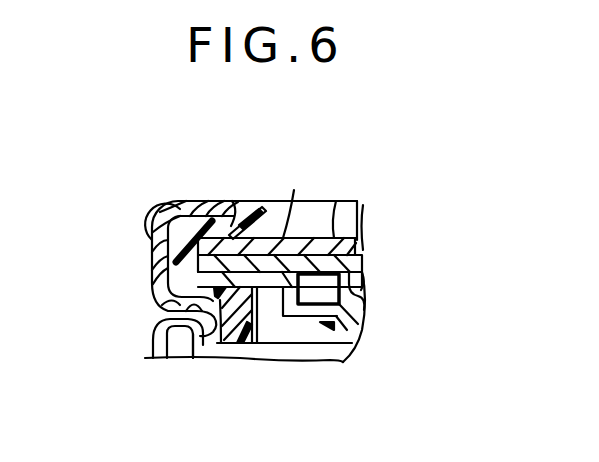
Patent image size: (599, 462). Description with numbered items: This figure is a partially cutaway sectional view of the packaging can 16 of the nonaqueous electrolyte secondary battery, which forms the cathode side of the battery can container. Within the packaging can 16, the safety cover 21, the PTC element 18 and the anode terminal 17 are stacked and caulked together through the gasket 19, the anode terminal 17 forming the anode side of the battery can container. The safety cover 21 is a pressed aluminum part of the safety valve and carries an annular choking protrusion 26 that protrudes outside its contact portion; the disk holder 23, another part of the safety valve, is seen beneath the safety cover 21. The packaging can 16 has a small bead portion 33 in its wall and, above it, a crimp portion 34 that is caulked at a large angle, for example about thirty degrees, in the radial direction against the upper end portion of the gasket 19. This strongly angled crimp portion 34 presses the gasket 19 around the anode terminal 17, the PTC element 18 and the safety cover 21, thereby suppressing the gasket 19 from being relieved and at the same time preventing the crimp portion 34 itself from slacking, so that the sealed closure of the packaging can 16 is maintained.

The packaging can 16 is at (150, 352).
The anode terminal 17 is at (357, 201).
The PTC element 18 is at (152, 288).
The gasket 19 is at (151, 232).
The safety cover 21 is at (294, 190).
The disk holder 23 is at (343, 332).
The annular choking protrusion 26 is at (301, 318).
The small bead portion 33 is at (193, 358).
The crimp portion 34 is at (214, 205).